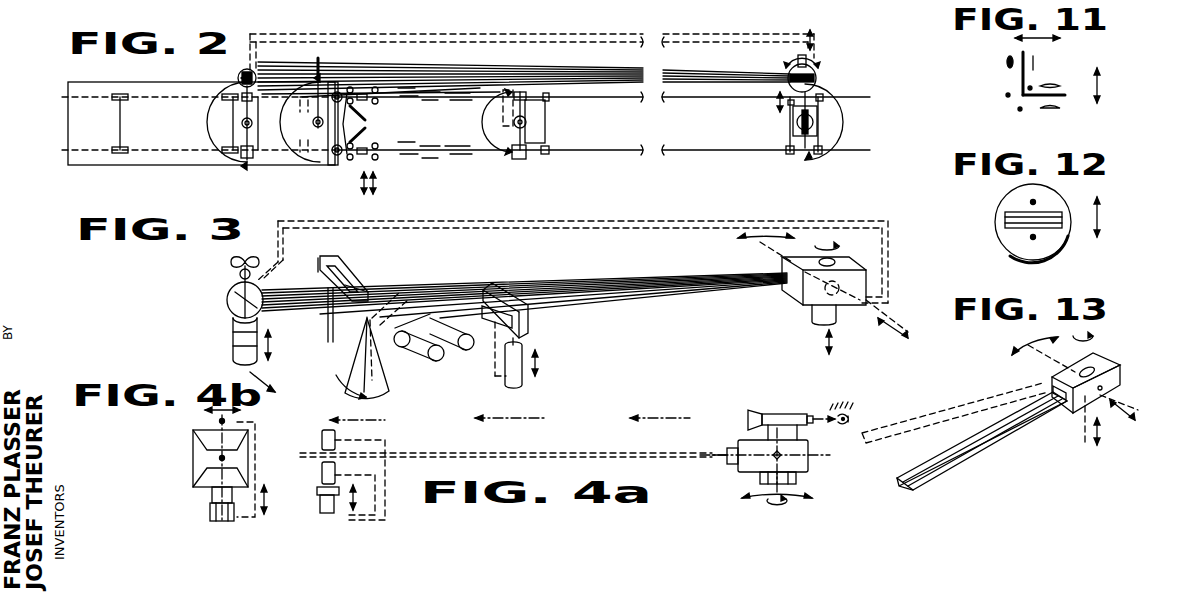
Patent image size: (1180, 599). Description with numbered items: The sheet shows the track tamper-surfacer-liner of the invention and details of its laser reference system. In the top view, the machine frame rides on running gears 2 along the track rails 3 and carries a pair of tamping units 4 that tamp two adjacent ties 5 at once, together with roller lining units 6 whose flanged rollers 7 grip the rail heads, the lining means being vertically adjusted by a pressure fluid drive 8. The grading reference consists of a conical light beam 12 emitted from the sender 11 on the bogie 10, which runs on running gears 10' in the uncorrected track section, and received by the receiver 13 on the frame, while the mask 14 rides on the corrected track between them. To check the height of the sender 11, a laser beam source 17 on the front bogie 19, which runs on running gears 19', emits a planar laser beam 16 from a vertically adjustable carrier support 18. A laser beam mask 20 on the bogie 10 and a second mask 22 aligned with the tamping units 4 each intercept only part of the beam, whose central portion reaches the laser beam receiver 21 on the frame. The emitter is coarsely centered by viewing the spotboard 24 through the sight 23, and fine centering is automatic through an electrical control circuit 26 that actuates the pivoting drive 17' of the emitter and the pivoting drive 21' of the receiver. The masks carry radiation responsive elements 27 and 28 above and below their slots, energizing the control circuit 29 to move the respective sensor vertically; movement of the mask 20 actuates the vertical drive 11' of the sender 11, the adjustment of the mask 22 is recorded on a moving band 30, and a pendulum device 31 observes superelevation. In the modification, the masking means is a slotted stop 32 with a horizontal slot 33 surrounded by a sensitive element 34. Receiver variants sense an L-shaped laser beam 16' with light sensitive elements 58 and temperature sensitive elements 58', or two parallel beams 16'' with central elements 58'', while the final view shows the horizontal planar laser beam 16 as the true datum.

In FIG. 2, the running gears 2 is at (258, 170).
In FIG. 2, the track rails 3 is at (705, 153).
In FIG. 2, the tamping units 4 is at (278, 153).
In FIG. 2, the ties 5 is at (313, 6).
In FIG. 2, the roller lining units 6 is at (376, 160).
In FIG. 2, the flanged rollers 7 is at (358, 156).
In FIG. 2, the pressure fluid drive 8 is at (338, 157).
In FIG. 2, the bogie 10 is at (550, 121).
In FIG. 2, the running gears 10' is at (555, 164).
In FIG. 2, the sender 11 is at (526, 163).
In FIG. 3, the vertical drive 11' is at (536, 391).
In FIG. 4b, the vertical drive 11' is at (210, 506).
In FIG. 4a, the vertical drive 11' is at (317, 507).
In FIG. 2, the conical light beam 12 is at (408, 100).
In FIG. 2, the receiver 13 is at (245, 158).
In FIG. 2, the light beam interceptor or mask 14 is at (338, 82).
In FIG. 2, the planar laser beam 16 is at (524, 89).
In FIG. 3, the planar laser beam 16 is at (524, 284).
In FIG. 13, the planar laser beam 16 is at (964, 436).
In FIG. 4a, the L-shaped laser beam 16' is at (506, 436).
In FIG. 11, the L-shaped laser beam 16' is at (1061, 88).
In FIG. 12, the parallel laser beams 16'' is at (1043, 223).
In FIG. 2, the laser beam source 17 is at (790, 71).
In FIG. 3, the laser beam source 17 is at (805, 269).
In FIG. 4a, the laser beam source 17 is at (767, 466).
In FIG. 13, the laser beam source 17 is at (1077, 388).
In FIG. 3, the pivoting drive 17' is at (860, 327).
In FIG. 4a, the pivoting drive 17' is at (756, 479).
In FIG. 2, the carrier support 18 is at (822, 95).
In FIG. 2, the front bogie 19 is at (825, 122).
In FIG. 2, the running gears 19' is at (778, 118).
In FIG. 2, the laser beam mask 20 is at (500, 96).
In FIG. 3, the laser beam mask 20 is at (503, 282).
In FIG. 2, the laser beam receiver 21 is at (232, 74).
In FIG. 12, the laser beam receiver 21 is at (1020, 223).
In FIG. 3, the pivoting drive 21' is at (237, 337).
In FIG. 2, the second laser beam sensor or mask 22 is at (318, 55).
In FIG. 3, the second laser beam sensor or mask 22 is at (312, 270).
In FIG. 4a, the sight 23 is at (776, 413).
In FIG. 3, the spotboard 24 is at (251, 266).
In FIG. 2, the electrical control circuit 26 is at (712, 28).
In FIG. 3, the electrical control circuit 26 is at (668, 221).
In FIG. 3, the radiation responsive elements 27 is at (340, 264).
In FIG. 3, the radiation responsive elements 28 is at (328, 300).
In FIG. 3, the electrical control circuit 29 is at (497, 365).
In FIG. 3, the moving band 30 is at (443, 352).
In FIG. 3, the pendulum device 31 is at (350, 355).
In FIG. 4b, the slotted stop 32 is at (204, 432).
In FIG. 4a, the slotted stop 32 is at (321, 436).
In FIG. 4b, the horizontal slot 33 is at (207, 457).
In FIG. 4a, the horizontal slot 33 is at (322, 467).
In FIG. 4b, the light- and/or temperature sensitive element 34 is at (248, 443).
In FIG. 4a, the light- and/or temperature sensitive element 34 is at (337, 442).
In FIG. 11, the light sensitive elements 58 is at (1011, 102).
In FIG. 11, the temperature sensitive elements 58' is at (1006, 73).
In FIG. 12, the light- and/or temperature sensitive elements 58'' is at (1065, 232).